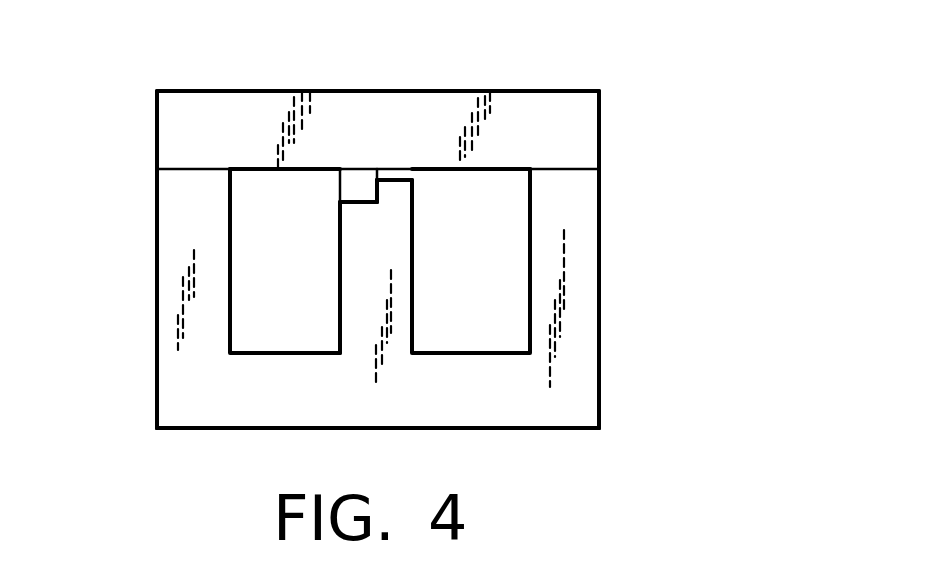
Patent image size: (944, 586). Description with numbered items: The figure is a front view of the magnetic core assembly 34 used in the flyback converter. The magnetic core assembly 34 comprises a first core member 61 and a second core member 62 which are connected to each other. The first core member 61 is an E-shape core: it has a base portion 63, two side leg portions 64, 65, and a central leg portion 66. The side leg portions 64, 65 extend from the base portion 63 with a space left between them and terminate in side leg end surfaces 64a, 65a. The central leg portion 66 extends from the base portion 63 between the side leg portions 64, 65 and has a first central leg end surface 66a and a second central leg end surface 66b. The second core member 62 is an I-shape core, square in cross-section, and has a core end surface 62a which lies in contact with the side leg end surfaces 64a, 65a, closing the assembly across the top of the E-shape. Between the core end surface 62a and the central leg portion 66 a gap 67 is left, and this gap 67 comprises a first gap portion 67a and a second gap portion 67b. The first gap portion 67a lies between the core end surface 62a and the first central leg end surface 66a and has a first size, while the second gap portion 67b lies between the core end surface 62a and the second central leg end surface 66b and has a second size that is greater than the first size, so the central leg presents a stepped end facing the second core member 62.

The magnetic core assembly 34 is at (618, 88).
The first core member 61 is at (614, 389).
The second core member 62 is at (592, 128).
The core end surface 62a is at (228, 192).
The base portion 63 is at (445, 407).
The side leg portion 64 is at (172, 265).
The side leg end surface 64a is at (184, 168).
The side leg portion 65 is at (580, 283).
The side leg end surface 65a is at (578, 168).
The central leg portion 66 is at (398, 260).
The first central leg end surface 66a is at (403, 173).
The second central leg end surface 66b is at (350, 203).
The gap 67 is at (338, 182).
The first gap portion 67a is at (388, 176).
The second gap portion 67b is at (360, 173).